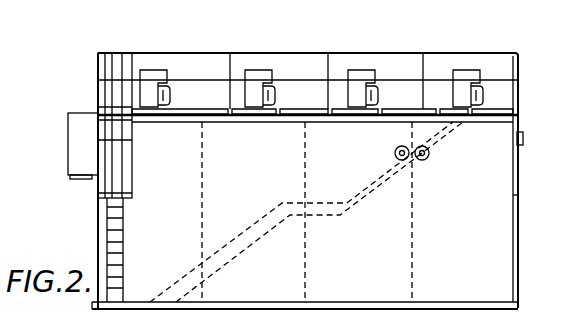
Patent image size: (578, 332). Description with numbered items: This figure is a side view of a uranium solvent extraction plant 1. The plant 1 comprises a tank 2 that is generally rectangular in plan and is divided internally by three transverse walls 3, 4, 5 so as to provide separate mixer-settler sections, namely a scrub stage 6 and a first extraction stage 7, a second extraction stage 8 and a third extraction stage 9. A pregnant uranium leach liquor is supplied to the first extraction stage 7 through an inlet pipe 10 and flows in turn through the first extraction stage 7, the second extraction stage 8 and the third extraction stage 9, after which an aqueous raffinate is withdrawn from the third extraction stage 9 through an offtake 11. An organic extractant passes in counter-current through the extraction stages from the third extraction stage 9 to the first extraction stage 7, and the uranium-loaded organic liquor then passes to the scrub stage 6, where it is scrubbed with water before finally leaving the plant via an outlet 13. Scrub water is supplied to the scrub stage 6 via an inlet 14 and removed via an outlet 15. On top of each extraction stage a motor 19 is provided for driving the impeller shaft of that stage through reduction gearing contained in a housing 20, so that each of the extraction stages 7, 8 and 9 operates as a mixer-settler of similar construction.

The uranium solvent extraction plant 1 is at (522, 248).
The tank 2 is at (513, 286).
The transverse wall 3 is at (413, 265).
The transverse wall 4 is at (306, 257).
The transverse wall 5 is at (213, 200).
The scrub stage 6 is at (462, 236).
The first extraction stage 7 is at (384, 238).
The second extraction stage 8 is at (261, 181).
The third extraction stage 9 is at (172, 181).
The inlet pipe 10 is at (394, 153).
The offtake 11 is at (81, 118).
The outlet 13 is at (523, 136).
The inlet 14 is at (517, 195).
The outlet 15 is at (427, 159).
The motor 19 is at (172, 92).
The housing 20 is at (155, 70).